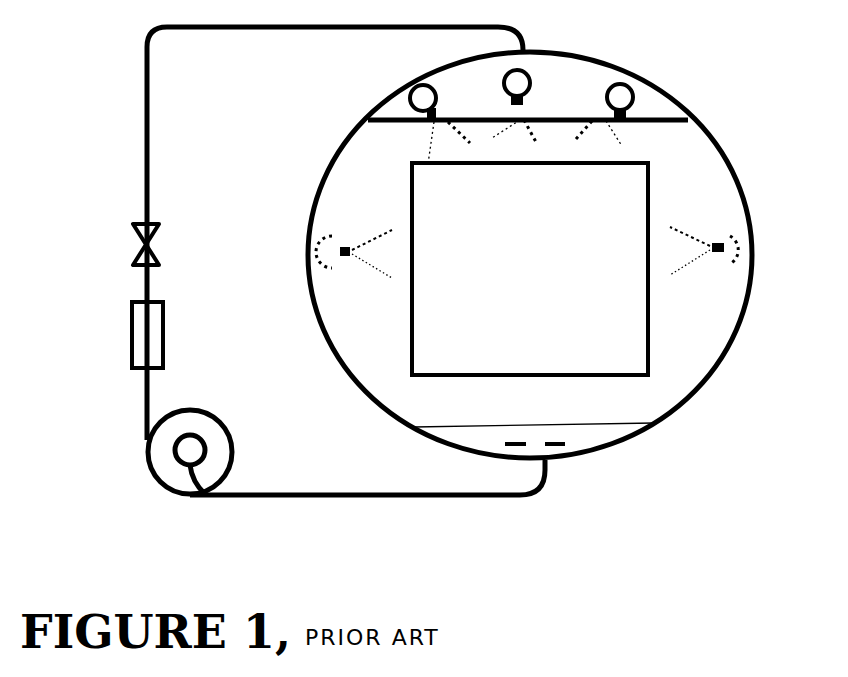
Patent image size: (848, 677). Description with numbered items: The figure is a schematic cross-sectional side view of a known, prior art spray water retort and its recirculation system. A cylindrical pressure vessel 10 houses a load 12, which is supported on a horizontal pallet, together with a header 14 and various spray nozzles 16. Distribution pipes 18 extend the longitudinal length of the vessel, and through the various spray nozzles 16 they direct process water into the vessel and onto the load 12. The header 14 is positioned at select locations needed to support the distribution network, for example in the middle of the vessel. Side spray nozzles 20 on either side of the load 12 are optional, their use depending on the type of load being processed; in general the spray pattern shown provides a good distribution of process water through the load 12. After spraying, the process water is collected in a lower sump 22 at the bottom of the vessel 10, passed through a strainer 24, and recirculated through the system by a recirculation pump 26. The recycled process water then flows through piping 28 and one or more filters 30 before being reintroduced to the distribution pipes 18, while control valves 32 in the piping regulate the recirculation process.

The cylindrical pressure vessel 10 is at (344, 138).
The load 12 is at (650, 190).
The header 14 is at (657, 115).
The spray nozzles 16 is at (537, 96).
The distribution pipes 18 is at (630, 92).
The side spray nozzles 20 is at (320, 250).
The lower sump 22 is at (622, 418).
The strainer 24 is at (556, 449).
The recirculation pump 26 is at (150, 473).
The piping 28 is at (336, 500).
The filters 30 is at (127, 333).
The control valves 32 is at (129, 232).